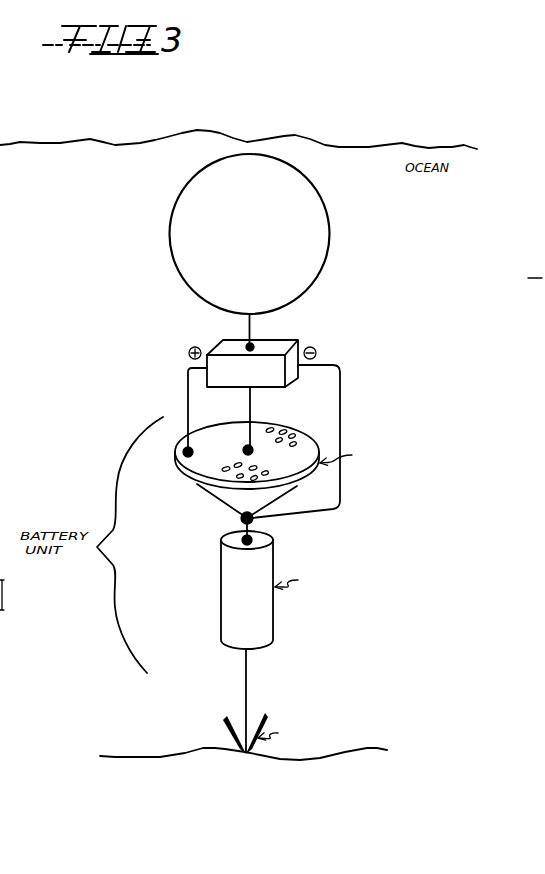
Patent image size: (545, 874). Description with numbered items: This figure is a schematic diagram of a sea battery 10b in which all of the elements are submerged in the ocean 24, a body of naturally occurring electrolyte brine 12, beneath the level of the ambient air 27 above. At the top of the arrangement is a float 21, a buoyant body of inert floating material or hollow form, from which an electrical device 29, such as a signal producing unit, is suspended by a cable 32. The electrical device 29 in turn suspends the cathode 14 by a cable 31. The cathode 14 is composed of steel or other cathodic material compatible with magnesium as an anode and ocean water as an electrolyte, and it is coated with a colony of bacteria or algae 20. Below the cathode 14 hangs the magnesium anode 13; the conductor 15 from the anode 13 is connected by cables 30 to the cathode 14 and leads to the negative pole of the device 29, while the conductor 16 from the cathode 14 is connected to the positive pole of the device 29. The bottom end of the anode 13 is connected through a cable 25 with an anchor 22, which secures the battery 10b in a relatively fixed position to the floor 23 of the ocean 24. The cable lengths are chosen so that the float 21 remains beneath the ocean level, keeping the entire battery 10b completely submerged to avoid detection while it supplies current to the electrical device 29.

The battery 10b is at (312, 430).
The naturally occurring electrolyte brine 12 is at (130, 349).
The magnesium anode 13 is at (275, 625).
The cathode 14 is at (198, 478).
The conductor 15 is at (295, 513).
The conductor 16 is at (188, 392).
The colony of bacteria or algae 20 is at (283, 427).
The float 21 is at (320, 250).
The anchor 22 is at (233, 720).
The floor 23 is at (130, 750).
The ocean 24 is at (62, 143).
The cable 25 is at (247, 692).
The ambient air 27 is at (51, 128).
The electrical device 29 is at (293, 337).
The cables 30 is at (264, 500).
The cable 31 is at (254, 410).
The cable 32 is at (252, 330).